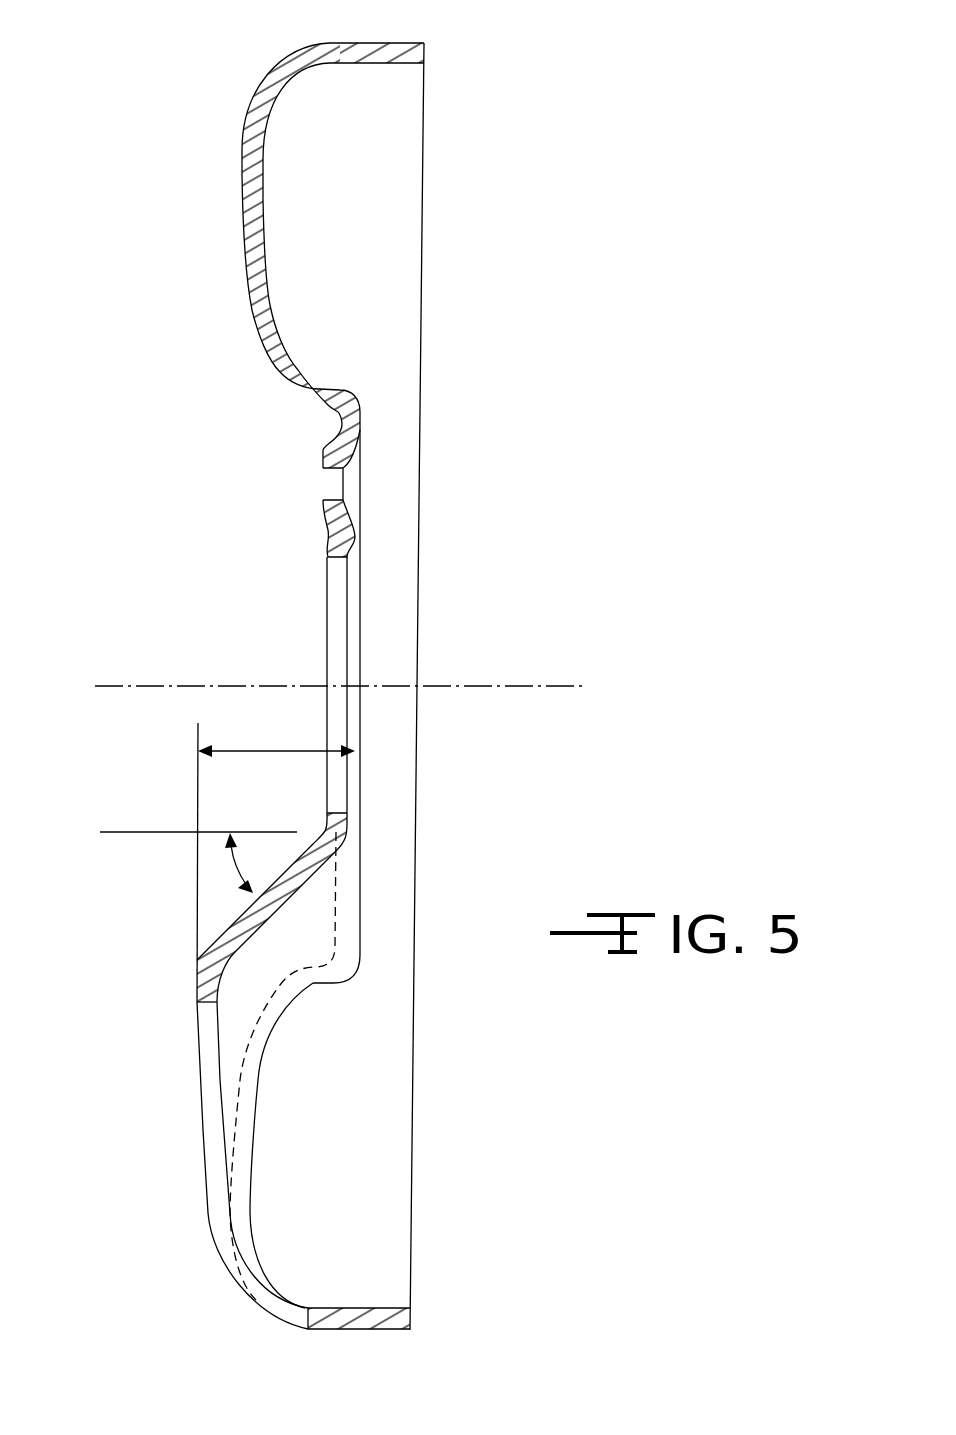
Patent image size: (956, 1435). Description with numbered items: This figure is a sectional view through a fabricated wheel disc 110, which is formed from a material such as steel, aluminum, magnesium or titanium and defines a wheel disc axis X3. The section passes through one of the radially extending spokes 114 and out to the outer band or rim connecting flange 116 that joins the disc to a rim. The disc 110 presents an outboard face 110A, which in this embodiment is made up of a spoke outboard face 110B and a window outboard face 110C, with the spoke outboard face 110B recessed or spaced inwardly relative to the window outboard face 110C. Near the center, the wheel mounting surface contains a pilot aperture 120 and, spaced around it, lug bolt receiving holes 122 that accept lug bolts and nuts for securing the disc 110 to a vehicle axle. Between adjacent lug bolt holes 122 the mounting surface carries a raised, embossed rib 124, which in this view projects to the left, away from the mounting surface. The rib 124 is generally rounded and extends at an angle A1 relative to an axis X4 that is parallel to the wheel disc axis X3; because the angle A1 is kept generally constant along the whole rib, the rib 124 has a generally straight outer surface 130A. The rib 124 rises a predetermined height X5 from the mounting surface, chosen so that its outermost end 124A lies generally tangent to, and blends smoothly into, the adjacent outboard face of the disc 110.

The wheel disc 110 is at (540, 348).
The outboard face 110A is at (212, 378).
The spoke outboard face 110B is at (242, 175).
The window outboard face 110C is at (197, 995).
The spoke 114 is at (252, 210).
The rim connecting flange 116 is at (383, 43).
The pilot aperture 120 is at (338, 560).
The lug bolt receiving hole 122 is at (332, 497).
The rib 124 is at (257, 920).
The outermost end of rib 124A is at (197, 972).
The outer surface of rib 130A is at (285, 857).
The wheel disc axis X3 is at (513, 683).
The axis X4 is at (175, 830).
The rib height X5 is at (278, 747).
The rib angle A1 is at (233, 870).